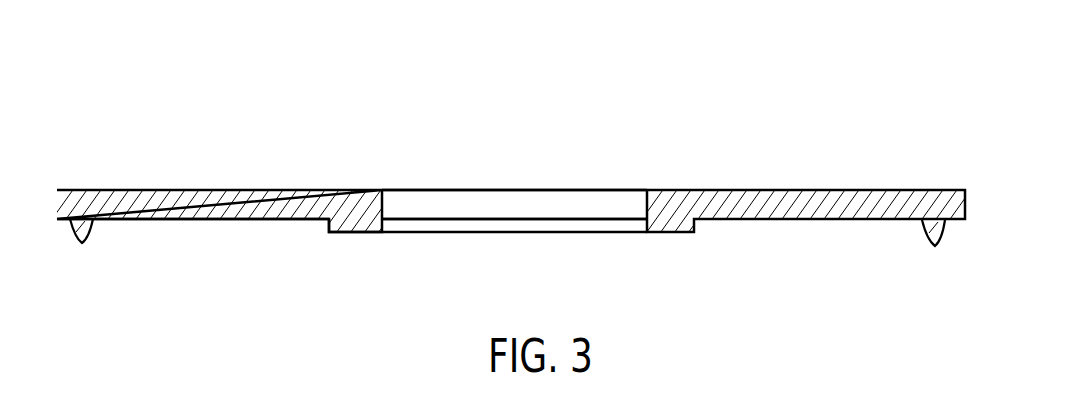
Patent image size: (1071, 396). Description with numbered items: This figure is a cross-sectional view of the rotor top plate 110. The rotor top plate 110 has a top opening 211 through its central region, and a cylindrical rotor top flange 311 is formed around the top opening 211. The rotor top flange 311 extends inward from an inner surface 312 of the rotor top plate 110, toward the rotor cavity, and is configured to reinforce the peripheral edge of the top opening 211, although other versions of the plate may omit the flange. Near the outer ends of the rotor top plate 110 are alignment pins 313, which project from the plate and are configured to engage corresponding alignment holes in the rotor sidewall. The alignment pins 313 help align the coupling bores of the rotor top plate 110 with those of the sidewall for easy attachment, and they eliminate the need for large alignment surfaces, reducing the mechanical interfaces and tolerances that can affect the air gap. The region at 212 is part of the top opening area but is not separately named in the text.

The rotor top plate 110 is at (666, 87).
The top opening 211 is at (383, 209).
The second window layer 212 is at (608, 208).
The rotor top flange 311 is at (352, 223).
The inner surface 312 is at (272, 241).
The alignment pins 313 is at (82, 243).